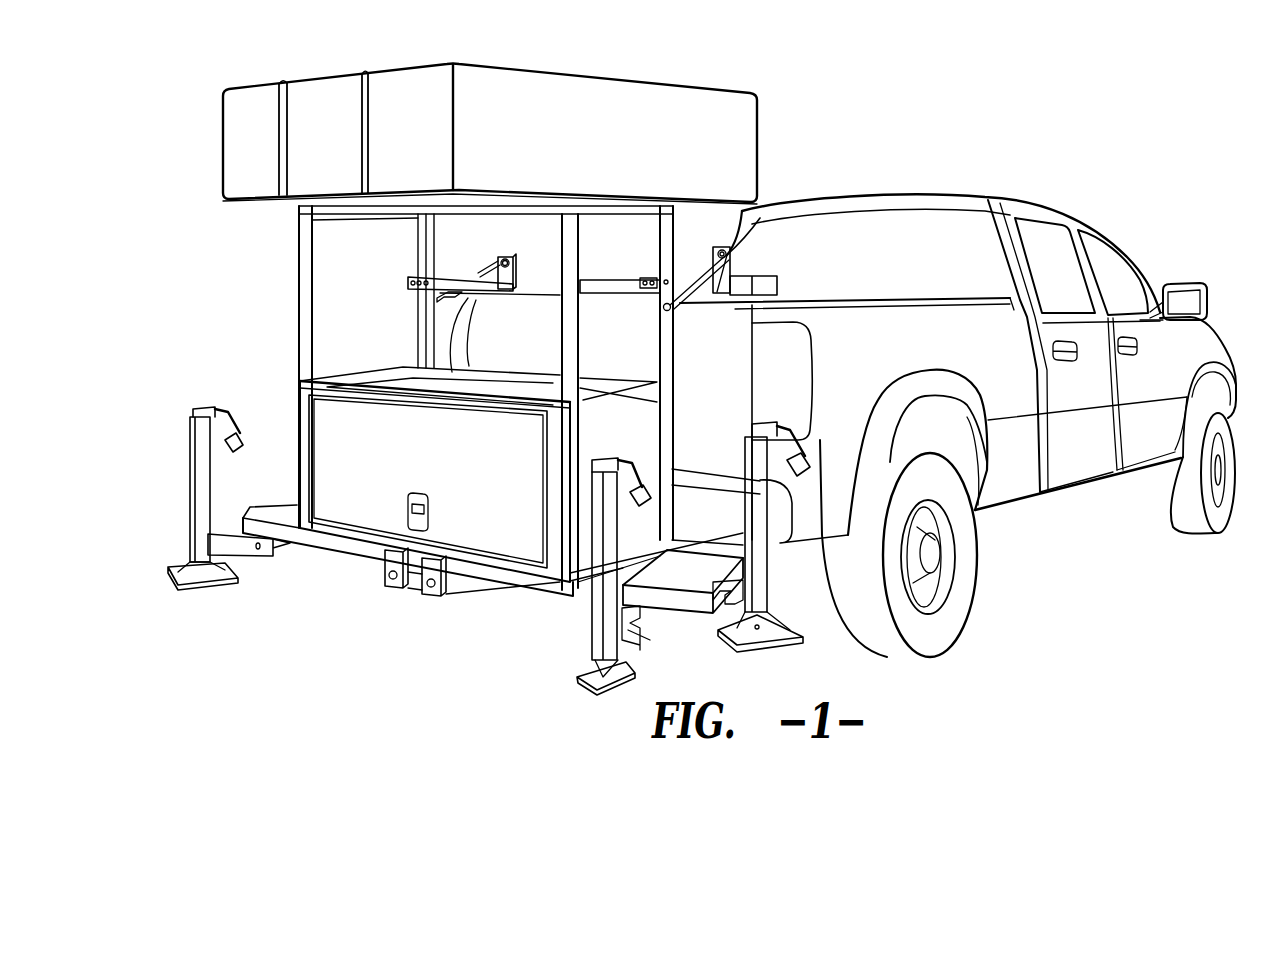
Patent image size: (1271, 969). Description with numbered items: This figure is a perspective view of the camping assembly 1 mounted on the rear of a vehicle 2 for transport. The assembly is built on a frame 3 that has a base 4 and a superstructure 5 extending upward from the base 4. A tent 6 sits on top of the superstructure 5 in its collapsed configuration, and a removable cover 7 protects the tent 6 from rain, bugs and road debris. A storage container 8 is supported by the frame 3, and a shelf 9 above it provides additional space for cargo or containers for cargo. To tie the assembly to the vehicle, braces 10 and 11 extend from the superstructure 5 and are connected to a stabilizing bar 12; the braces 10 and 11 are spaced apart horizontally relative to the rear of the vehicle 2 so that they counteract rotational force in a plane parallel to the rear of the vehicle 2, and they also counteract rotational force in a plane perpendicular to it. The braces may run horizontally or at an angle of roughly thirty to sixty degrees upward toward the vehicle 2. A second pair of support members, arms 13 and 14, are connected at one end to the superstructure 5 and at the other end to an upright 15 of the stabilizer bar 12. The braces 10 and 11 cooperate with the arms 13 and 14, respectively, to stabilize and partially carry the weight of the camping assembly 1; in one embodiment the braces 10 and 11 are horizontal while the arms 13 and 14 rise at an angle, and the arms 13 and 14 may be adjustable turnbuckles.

The camping assembly 1 is at (237, 254).
The vehicle 2 is at (1012, 178).
The frame 3 is at (296, 367).
The base 4 is at (531, 582).
The superstructure 5 is at (298, 272).
The tent 6 is at (672, 100).
The removable cover 7 is at (480, 66).
The storage container 8 is at (362, 505).
The shelf 9 is at (432, 372).
The brace 10 is at (445, 280).
The brace 11 is at (688, 283).
The stabilizing bar 12 is at (607, 283).
The arm 13 is at (715, 295).
The arm 14 is at (476, 268).
The upright 15 is at (524, 268).